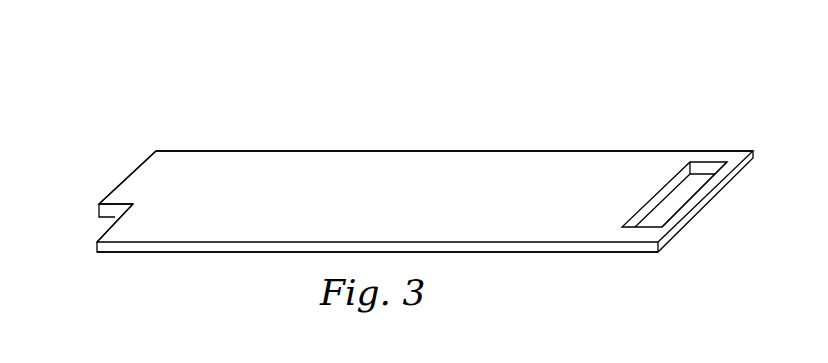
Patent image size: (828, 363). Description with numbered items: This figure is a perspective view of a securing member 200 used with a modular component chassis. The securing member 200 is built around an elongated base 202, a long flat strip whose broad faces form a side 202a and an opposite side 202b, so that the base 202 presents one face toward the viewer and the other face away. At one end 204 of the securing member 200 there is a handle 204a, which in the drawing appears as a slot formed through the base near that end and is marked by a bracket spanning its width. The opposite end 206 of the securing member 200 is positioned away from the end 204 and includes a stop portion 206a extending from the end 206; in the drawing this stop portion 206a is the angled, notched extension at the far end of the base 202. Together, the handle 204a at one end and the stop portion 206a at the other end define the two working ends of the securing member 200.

The securing member 200 is at (203, 75).
The elongated base 202 is at (423, 210).
The side 202a is at (263, 252).
The side 202b is at (361, 150).
The end 204 is at (703, 205).
The handle 204a is at (760, 138).
The end 206 is at (100, 232).
The stop portion 206a is at (125, 178).